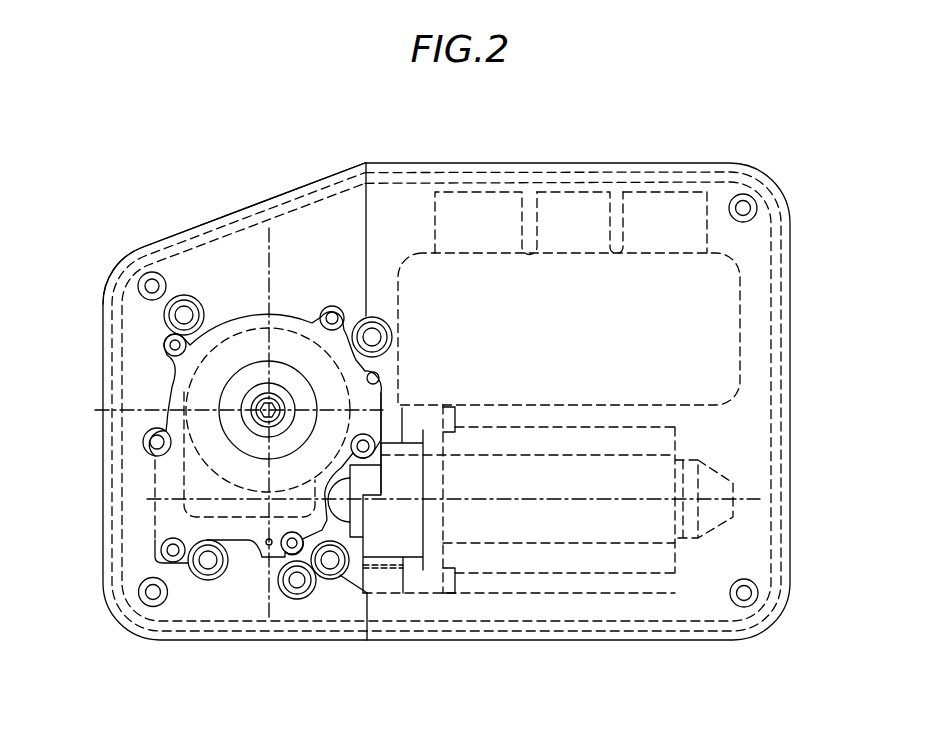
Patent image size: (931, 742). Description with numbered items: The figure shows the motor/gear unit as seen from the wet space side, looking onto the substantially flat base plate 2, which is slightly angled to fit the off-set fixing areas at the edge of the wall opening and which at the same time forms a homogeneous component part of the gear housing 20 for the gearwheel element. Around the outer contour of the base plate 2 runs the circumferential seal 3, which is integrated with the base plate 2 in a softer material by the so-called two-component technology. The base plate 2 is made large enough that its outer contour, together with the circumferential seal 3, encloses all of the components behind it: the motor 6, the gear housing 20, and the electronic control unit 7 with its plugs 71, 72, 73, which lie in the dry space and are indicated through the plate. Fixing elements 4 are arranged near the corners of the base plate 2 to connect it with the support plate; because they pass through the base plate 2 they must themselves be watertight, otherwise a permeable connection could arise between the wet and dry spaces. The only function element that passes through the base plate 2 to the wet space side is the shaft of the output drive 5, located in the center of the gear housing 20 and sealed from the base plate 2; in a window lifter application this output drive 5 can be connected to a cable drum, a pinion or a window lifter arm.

The base plate 2 is at (243, 250).
The circumferential seal 3 is at (313, 198).
The fixing elements 4 is at (145, 273).
The output drive 5 is at (250, 428).
The motor 6 is at (653, 442).
The electronic control unit 7 is at (713, 372).
The gear housing 20 is at (205, 388).
The plug 71 is at (483, 217).
The plug 72 is at (577, 217).
The plug 73 is at (665, 217).